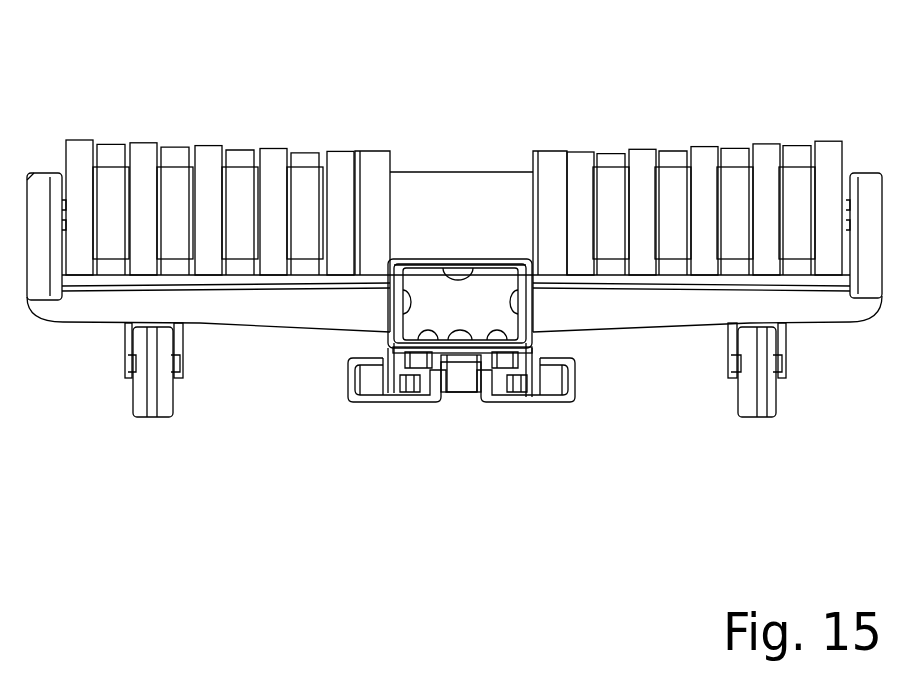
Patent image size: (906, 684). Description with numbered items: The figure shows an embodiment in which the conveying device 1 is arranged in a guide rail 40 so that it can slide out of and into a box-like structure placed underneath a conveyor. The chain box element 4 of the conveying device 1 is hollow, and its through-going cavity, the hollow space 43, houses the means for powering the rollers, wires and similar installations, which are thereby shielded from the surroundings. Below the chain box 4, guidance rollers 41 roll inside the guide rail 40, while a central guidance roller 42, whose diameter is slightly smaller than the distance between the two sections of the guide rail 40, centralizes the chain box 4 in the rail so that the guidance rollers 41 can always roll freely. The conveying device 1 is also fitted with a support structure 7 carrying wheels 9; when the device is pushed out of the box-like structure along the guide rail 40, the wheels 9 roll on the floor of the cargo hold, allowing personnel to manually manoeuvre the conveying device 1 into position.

The conveying device 1 is at (447, 135).
The chain box element 4 is at (482, 265).
The support structure 7 is at (618, 303).
The wheels 9 is at (782, 407).
The guide rail 40 is at (527, 442).
The guidance rollers 41 is at (372, 382).
The central guidance roller 42 is at (463, 372).
The hollow space 43 is at (460, 305).